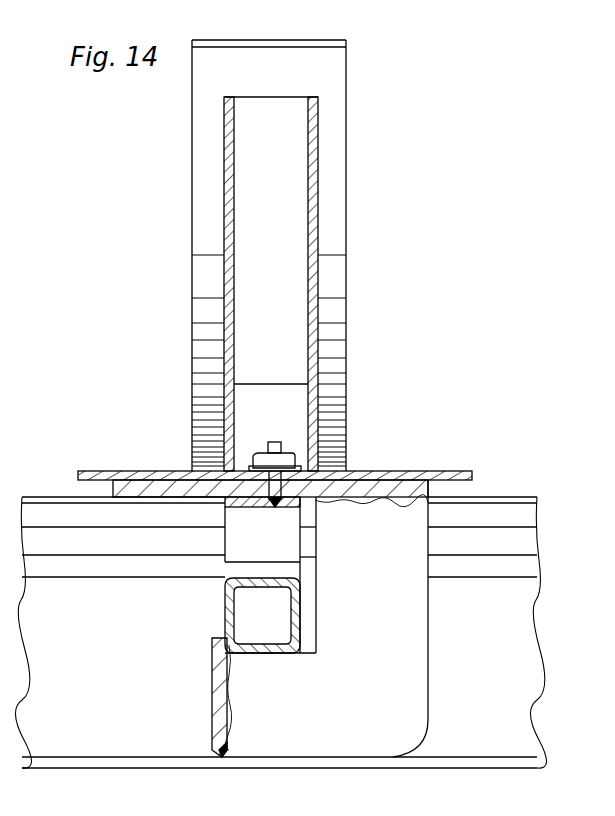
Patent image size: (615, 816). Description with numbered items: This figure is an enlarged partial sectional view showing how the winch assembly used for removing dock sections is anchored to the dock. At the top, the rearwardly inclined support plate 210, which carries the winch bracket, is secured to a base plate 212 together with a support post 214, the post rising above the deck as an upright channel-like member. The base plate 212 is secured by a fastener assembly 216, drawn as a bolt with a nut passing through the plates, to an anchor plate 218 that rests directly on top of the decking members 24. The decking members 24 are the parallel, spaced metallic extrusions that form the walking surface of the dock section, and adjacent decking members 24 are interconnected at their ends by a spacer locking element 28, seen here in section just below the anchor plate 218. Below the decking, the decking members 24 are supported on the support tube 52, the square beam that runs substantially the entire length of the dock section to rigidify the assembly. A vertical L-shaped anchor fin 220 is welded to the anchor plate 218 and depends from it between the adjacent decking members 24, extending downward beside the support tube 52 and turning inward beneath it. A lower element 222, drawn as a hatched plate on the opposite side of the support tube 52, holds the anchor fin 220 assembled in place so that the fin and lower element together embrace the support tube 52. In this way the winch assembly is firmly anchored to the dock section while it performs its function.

The support plate 210 is at (330, 218).
The support post 214 is at (318, 176).
The fastener assembly 216 is at (275, 441).
The base plate 212 is at (390, 470).
The anchor plate 218 is at (149, 490).
The spacer locking element 28 is at (286, 512).
The support tube 52 is at (296, 608).
The lower element 222 is at (212, 681).
The decking member 24 is at (522, 515).
The anchor fin 220 is at (410, 642).